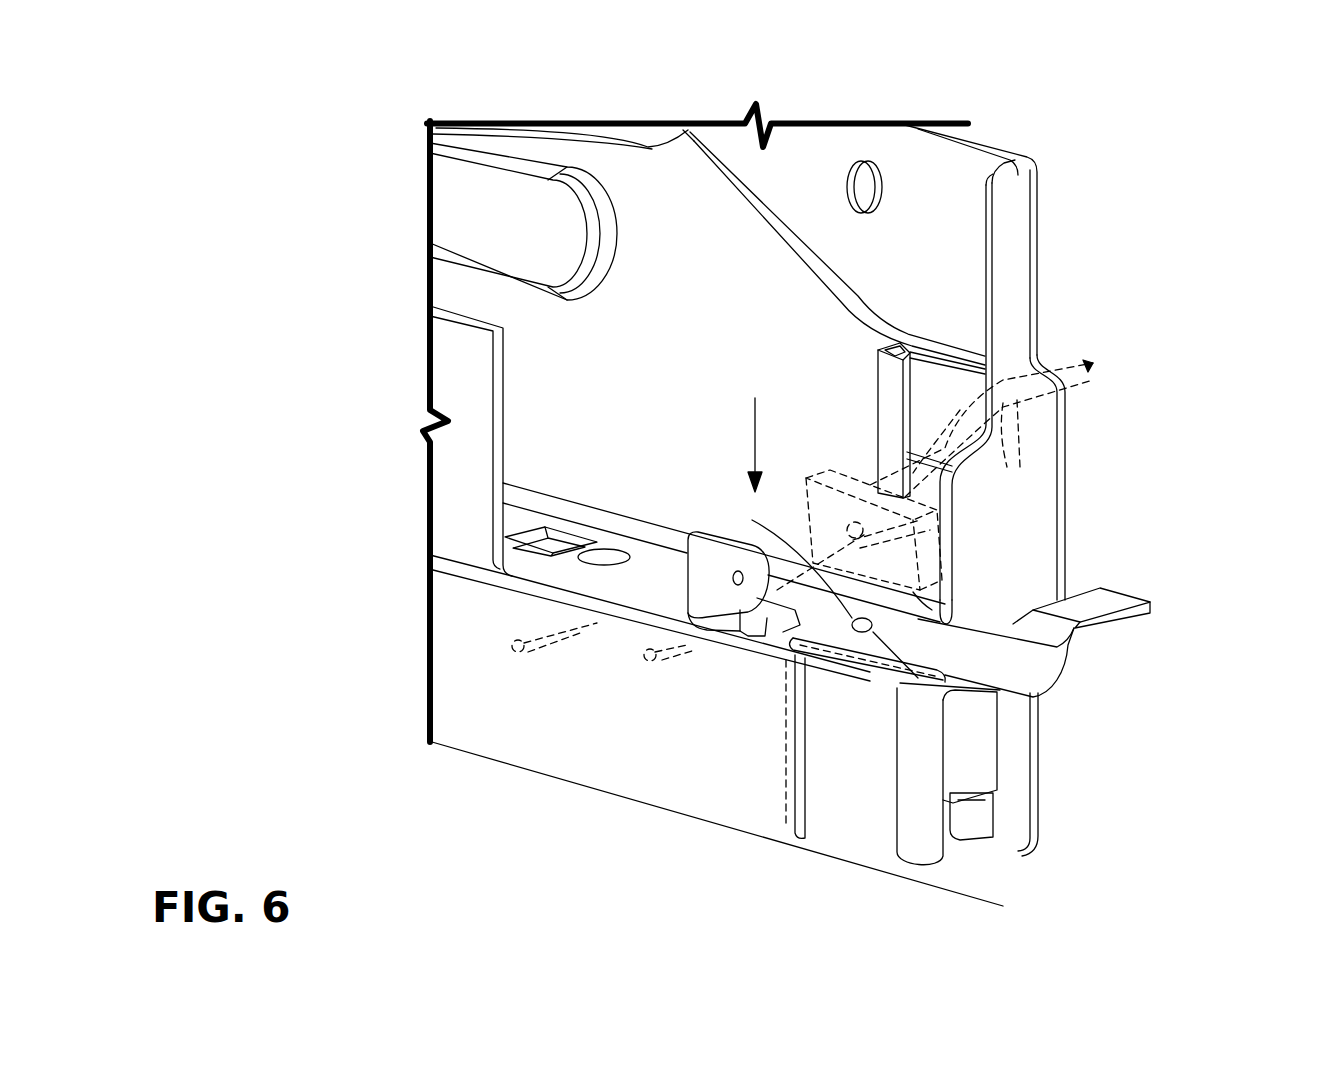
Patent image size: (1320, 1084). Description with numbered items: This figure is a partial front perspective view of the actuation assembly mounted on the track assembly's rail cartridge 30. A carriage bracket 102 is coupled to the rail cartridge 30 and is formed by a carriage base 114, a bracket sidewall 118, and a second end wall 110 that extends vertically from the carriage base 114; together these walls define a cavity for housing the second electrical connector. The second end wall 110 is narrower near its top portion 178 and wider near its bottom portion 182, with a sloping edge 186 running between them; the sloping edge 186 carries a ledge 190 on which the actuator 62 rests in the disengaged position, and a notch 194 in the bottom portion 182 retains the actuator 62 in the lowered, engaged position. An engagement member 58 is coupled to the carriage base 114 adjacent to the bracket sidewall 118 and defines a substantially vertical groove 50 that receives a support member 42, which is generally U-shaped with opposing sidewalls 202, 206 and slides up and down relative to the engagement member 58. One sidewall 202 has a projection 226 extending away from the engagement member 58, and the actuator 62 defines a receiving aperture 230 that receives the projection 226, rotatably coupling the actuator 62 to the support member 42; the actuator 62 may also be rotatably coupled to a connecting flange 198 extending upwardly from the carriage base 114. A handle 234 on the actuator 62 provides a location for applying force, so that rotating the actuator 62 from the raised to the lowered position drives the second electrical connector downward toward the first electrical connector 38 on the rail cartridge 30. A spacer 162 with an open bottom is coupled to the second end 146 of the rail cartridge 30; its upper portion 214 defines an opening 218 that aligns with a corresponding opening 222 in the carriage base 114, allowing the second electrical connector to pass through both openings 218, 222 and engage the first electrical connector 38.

The rail cartridge 30 is at (648, 810).
The first electrical connector 38 is at (978, 836).
The support member 42 is at (873, 632).
The groove 50 is at (903, 350).
The engagement member 58 is at (977, 368).
The actuator 62 is at (1042, 678).
The carriage bracket 102 is at (987, 143).
The second end wall 110 is at (1040, 300).
The carriage base 114 is at (560, 565).
The bracket sidewall 118 is at (644, 200).
The second end 146 is at (803, 790).
The spacer 162 is at (920, 838).
The top portion 178 is at (1008, 281).
The bottom portion 182 is at (1060, 530).
The sloping edge 186 is at (977, 388).
The ledge 190 is at (977, 468).
The notch 194 is at (947, 620).
The connecting flange 198 is at (708, 616).
The sidewall 202 is at (812, 652).
The sidewall 206 is at (1048, 535).
The upper portion 214 is at (903, 700).
The opening 218 is at (873, 693).
The opening 222 is at (699, 620).
The projection 226 is at (910, 592).
The receiving aperture 230 is at (755, 523).
The handle 234 is at (1100, 607).